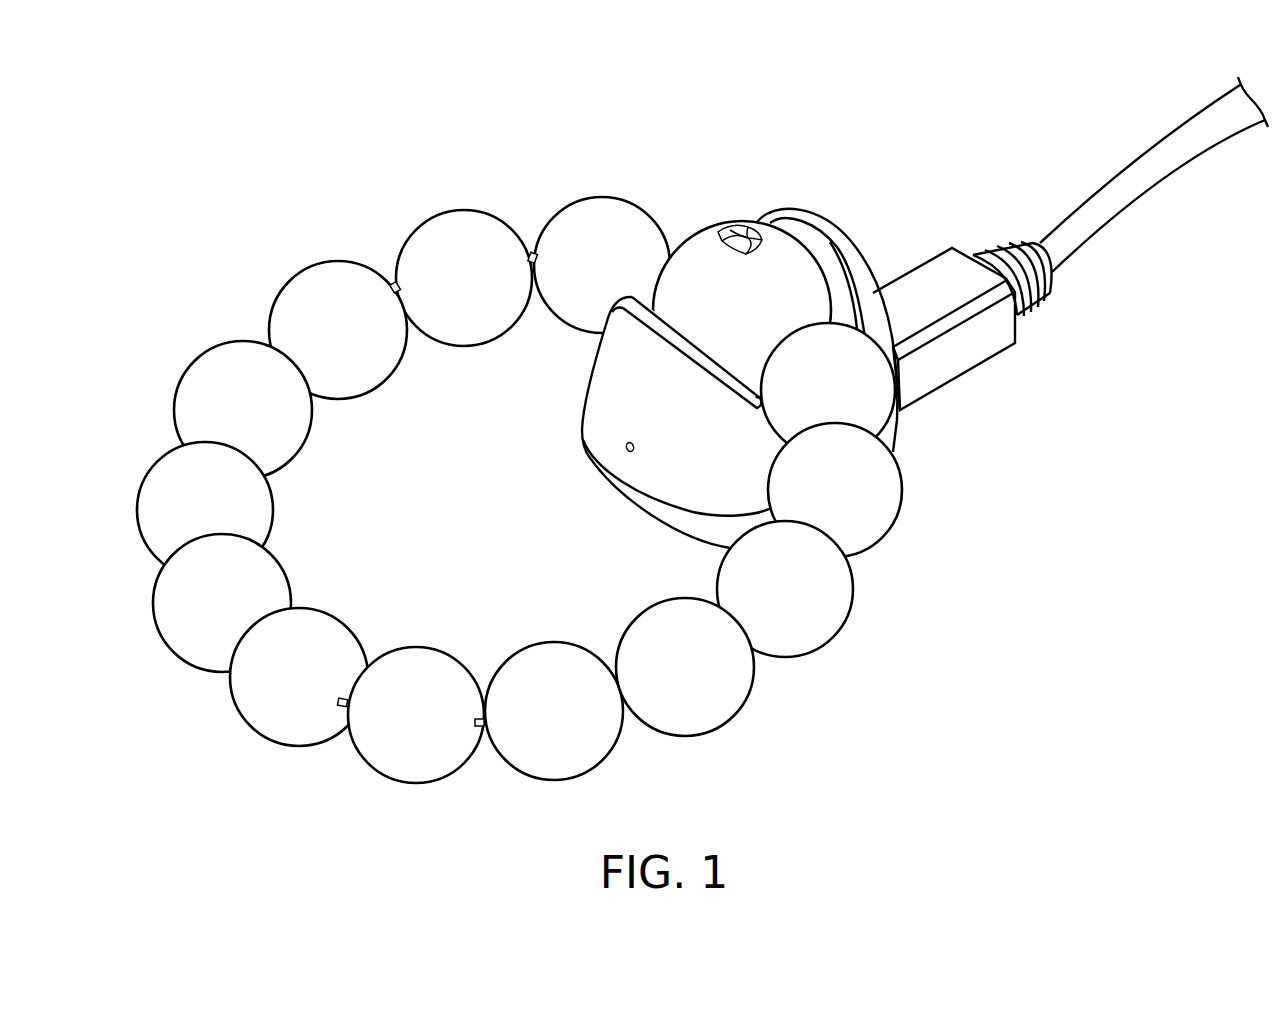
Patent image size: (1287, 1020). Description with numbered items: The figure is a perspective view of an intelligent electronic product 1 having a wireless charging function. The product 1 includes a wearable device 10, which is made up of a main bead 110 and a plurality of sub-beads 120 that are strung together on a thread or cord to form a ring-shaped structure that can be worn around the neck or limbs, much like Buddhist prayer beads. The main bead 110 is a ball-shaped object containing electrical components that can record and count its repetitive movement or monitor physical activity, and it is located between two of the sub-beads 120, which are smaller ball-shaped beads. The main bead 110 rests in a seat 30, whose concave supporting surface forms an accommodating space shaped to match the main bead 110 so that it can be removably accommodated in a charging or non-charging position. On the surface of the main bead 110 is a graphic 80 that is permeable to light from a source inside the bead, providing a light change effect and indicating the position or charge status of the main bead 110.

The intelligent electronic product 1 is at (284, 82).
The wearable device 10 is at (453, 114).
The sub-beads 120 is at (471, 192).
The main bead 110 is at (692, 231).
The graphic 80 is at (742, 215).
The seat 30 is at (570, 482).